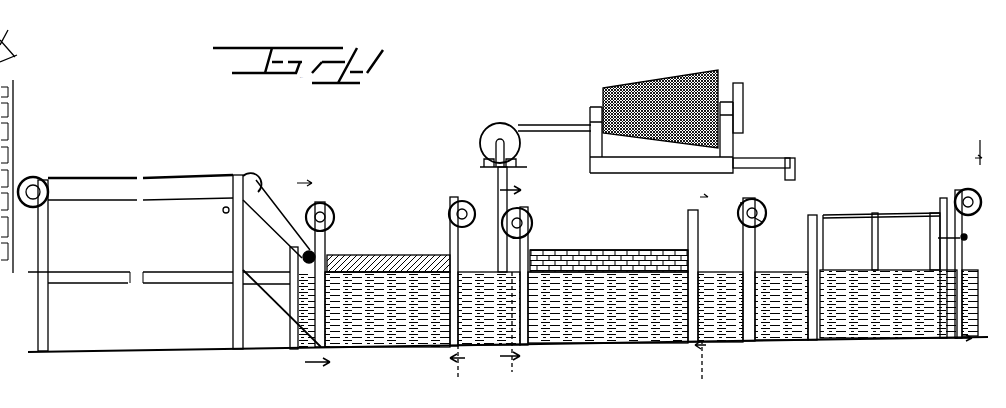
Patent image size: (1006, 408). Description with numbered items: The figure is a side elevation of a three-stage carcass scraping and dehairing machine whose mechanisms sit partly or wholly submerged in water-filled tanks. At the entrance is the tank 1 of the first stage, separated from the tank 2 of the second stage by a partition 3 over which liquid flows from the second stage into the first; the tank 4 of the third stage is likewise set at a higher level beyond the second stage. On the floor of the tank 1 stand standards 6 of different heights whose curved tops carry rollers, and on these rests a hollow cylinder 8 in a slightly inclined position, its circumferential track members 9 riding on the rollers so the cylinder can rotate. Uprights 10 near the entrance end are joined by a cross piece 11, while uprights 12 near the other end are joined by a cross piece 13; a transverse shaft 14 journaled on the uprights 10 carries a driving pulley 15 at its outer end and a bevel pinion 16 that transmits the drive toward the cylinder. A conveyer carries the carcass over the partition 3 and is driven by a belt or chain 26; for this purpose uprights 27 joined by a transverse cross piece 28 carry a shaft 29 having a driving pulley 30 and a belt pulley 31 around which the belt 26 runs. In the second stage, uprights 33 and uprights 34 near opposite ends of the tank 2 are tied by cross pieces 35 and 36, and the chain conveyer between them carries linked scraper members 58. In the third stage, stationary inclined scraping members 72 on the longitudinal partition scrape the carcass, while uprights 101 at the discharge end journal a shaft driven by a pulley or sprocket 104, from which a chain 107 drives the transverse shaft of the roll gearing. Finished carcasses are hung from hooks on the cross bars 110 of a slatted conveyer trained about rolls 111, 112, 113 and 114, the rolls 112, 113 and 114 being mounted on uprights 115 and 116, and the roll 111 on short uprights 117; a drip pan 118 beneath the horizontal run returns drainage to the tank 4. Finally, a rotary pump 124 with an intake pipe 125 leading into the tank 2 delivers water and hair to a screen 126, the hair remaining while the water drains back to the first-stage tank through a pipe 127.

The tank 1 is at (888, 304).
The tank 2 is at (608, 307).
The partition 3 is at (968, 250).
The tank 4 is at (387, 309).
The standards 6 is at (517, 277).
The hollow cylinder 8 is at (881, 227).
The track members 9 is at (878, 233).
The uprights 10 is at (974, 292).
The cross piece 11 is at (709, 279).
The uprights 12 is at (812, 258).
The cross piece 13 is at (961, 264).
The transverse shaft 14 is at (471, 285).
The driving pulley 15 is at (968, 255).
The bevel pinion 16 is at (967, 189).
The belt or chain 26 is at (781, 295).
The uprights 27 is at (743, 250).
The transverse cross piece 28 is at (742, 203).
The shaft 29 is at (725, 226).
The driving pulley 30 is at (761, 208).
The belt pulley 31 is at (762, 223).
The uprights 33 is at (697, 288).
The uprights 34 is at (523, 304).
The cross piece 35 is at (688, 208).
The cross piece 36 is at (609, 227).
The linked scraper members 58 is at (666, 251).
The stationary inclined scraping members 72 is at (385, 251).
The uprights 101 is at (331, 318).
The pulley or sprocket 104 is at (323, 203).
The chain 107 is at (326, 249).
The cross bars 110 is at (178, 176).
The roll 111 is at (307, 250).
The roll 112 is at (256, 190).
The roll 113 is at (34, 178).
The roll 114 is at (222, 212).
The uprights 115 is at (47, 262).
The uprights 116 is at (233, 248).
The short uprights 117 is at (291, 334).
The drip pan 118 is at (125, 280).
The rotary pump 124 is at (486, 151).
The intake pipe 125 is at (497, 189).
The screen 126 is at (684, 77).
The pipe 127 is at (779, 160).